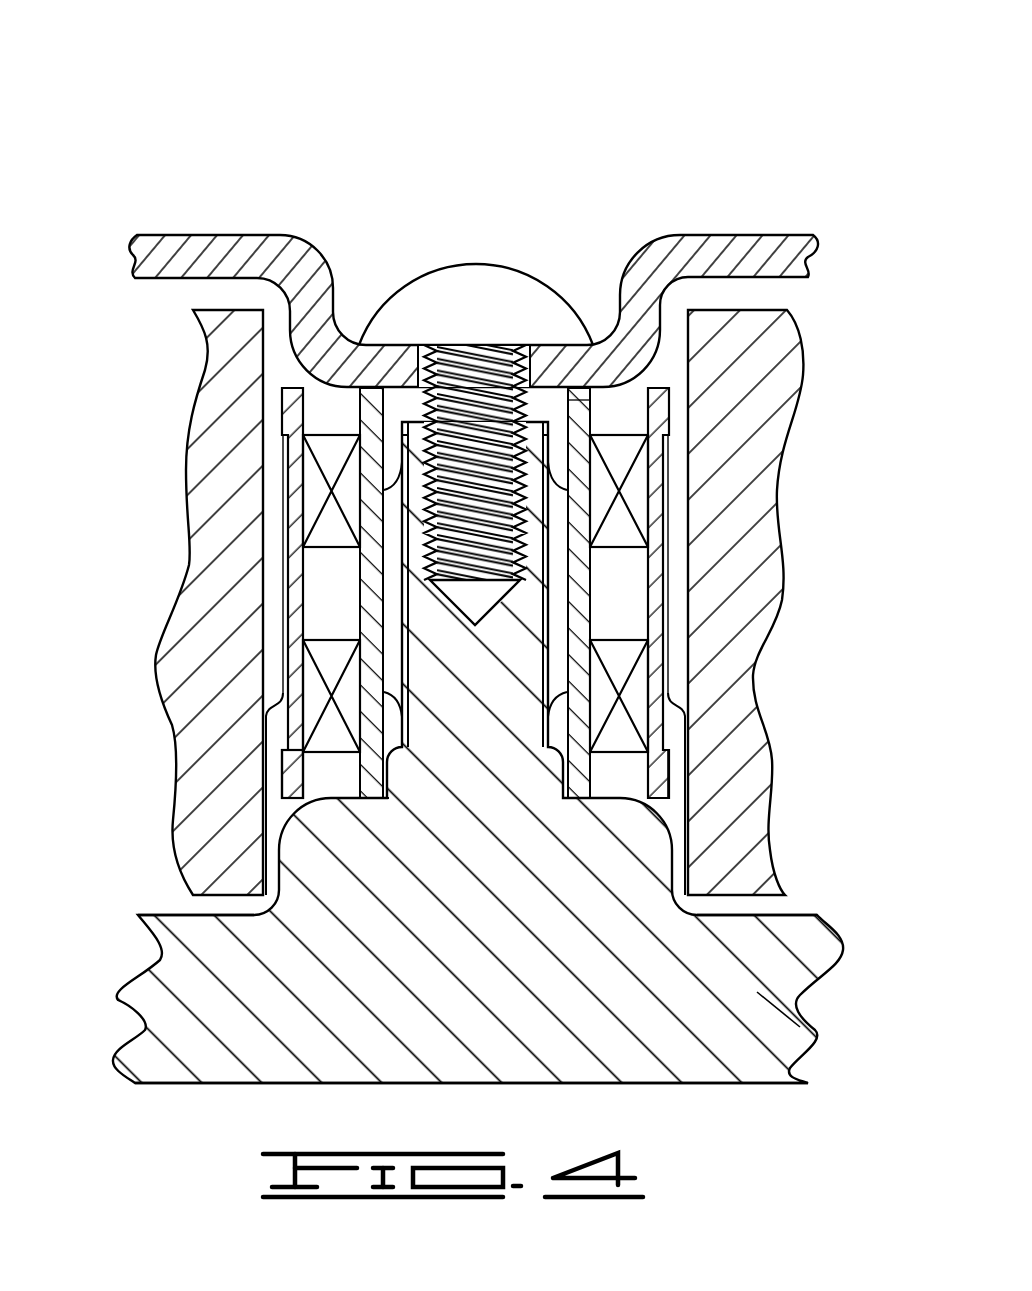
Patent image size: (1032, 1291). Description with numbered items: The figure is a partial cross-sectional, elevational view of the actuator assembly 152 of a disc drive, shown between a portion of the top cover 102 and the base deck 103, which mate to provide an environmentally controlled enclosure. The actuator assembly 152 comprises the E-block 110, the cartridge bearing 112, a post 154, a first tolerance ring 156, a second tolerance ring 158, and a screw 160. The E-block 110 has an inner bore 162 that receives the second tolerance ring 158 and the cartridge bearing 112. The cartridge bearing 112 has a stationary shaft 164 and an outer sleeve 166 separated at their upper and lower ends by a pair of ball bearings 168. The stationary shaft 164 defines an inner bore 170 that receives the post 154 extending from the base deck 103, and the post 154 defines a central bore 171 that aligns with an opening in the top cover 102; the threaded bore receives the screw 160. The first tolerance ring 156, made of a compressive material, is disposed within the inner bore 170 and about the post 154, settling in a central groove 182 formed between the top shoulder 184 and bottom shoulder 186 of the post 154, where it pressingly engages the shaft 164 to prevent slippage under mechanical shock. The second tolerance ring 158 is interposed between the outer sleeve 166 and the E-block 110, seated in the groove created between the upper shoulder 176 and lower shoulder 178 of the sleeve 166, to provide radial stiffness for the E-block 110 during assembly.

The top cover 102 is at (745, 255).
The base deck 103 is at (800, 1035).
The E-block 110 is at (200, 640).
The cartridge bearing 112 is at (327, 767).
The actuator assembly 152 is at (218, 85).
The post 154 is at (497, 703).
The first tolerance ring 156 is at (558, 605).
The second tolerance ring 158 is at (677, 532).
The screw 160 is at (433, 302).
The inner bore 162 is at (284, 355).
The stationary shaft 164 is at (582, 406).
The outer sleeve 166 is at (293, 420).
The ball bearings 168 is at (320, 497).
The inner bore 170 is at (554, 395).
The central bore 171 is at (468, 397).
The upper shoulder 176 is at (590, 400).
The lower shoulder 178 is at (665, 802).
The central groove 182 is at (556, 628).
The top shoulder 184 is at (553, 452).
The bottom shoulder 186 is at (553, 733).